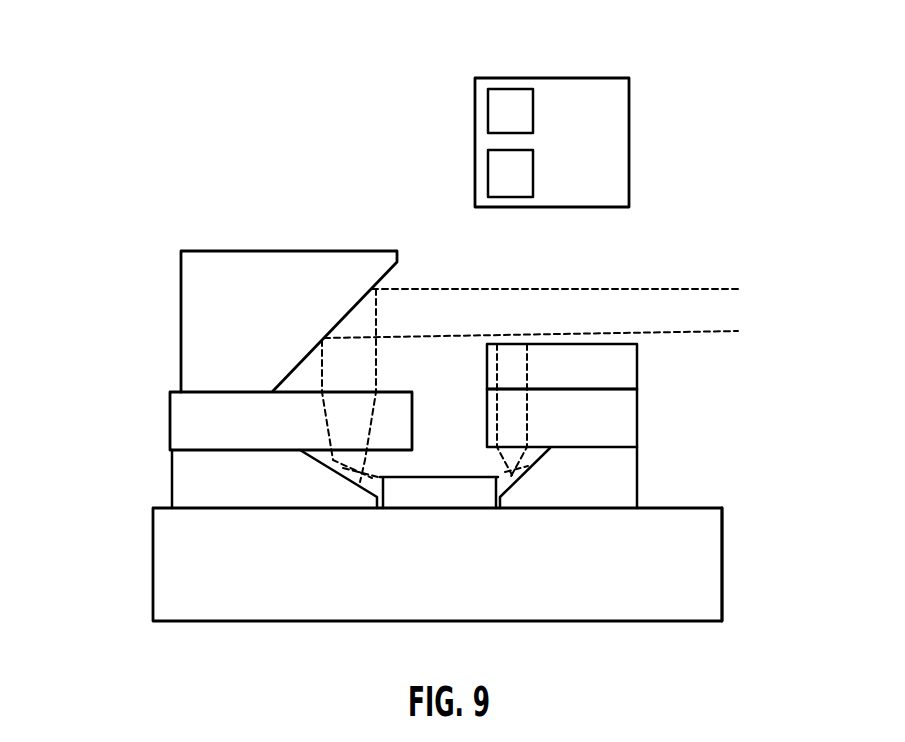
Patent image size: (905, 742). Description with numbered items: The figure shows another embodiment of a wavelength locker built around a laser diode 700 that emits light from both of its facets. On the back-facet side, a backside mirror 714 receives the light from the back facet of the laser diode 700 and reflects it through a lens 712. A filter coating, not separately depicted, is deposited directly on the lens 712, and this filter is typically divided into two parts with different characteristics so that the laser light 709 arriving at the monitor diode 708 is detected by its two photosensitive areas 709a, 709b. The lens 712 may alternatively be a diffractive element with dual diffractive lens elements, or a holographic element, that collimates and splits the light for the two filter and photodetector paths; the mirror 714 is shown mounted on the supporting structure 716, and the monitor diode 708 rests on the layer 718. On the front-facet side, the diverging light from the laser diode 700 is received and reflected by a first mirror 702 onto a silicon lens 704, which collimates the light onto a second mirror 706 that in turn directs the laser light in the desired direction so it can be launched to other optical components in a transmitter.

The laser diode 700 is at (153, 567).
The first mirror 702 is at (170, 477).
The silicon lens 704 is at (170, 422).
The second mirror 706 is at (181, 333).
The monitor diode 708 is at (638, 363).
The optical beam 709 is at (562, 344).
The photosensitive area 709a is at (510, 103).
The photosensitive area 709b is at (510, 172).
The lens 712 is at (638, 413).
The backside mirror 714 is at (638, 458).
The substrate side 716 is at (723, 562).
The interface layer 718 is at (638, 388).